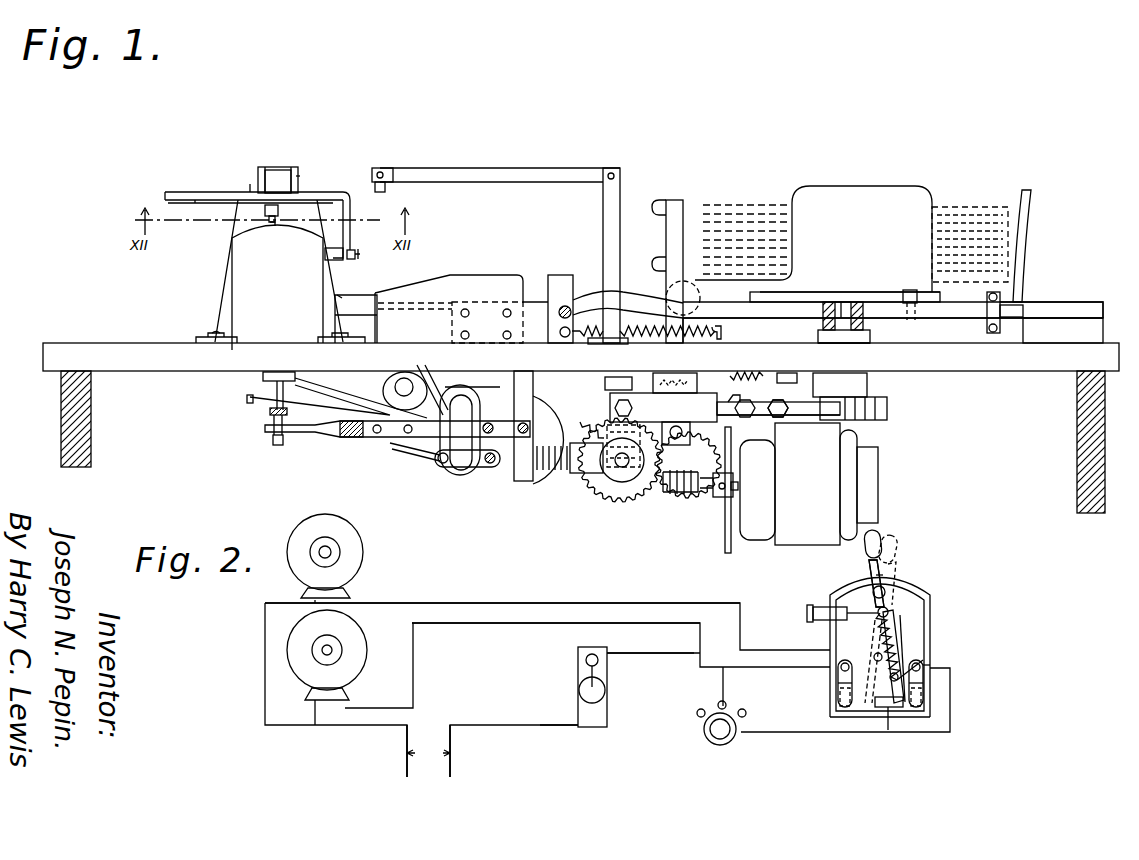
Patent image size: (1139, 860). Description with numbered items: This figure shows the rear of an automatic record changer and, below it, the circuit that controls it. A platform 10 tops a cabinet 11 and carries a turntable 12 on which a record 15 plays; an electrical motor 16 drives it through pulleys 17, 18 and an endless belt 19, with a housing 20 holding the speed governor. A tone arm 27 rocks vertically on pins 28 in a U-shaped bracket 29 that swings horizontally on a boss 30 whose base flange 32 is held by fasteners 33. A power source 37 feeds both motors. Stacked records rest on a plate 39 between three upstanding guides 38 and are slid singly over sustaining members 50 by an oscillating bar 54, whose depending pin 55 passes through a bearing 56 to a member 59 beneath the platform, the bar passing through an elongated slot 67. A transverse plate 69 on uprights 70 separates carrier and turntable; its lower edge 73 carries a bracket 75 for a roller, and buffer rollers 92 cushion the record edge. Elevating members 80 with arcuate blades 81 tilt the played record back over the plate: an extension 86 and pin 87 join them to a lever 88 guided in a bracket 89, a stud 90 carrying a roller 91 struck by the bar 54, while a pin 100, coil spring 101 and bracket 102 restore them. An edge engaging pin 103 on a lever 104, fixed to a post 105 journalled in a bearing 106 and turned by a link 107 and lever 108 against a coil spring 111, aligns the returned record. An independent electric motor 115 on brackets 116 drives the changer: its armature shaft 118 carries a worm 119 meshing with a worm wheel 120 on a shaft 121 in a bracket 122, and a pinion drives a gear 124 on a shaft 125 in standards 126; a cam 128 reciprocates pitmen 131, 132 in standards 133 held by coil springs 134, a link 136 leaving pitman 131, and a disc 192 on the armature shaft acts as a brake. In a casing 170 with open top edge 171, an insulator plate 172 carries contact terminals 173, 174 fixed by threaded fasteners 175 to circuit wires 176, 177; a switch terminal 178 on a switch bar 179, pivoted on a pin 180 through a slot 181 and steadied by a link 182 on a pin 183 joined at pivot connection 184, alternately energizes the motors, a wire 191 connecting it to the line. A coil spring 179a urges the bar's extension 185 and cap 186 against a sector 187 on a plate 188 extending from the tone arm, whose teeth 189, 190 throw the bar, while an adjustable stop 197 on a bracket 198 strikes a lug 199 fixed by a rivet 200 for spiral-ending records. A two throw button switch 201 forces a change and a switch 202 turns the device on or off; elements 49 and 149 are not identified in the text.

In FIG. 1, the platform 10 is at (173, 362).
In FIG. 1, the cabinet 11 is at (91, 442).
In FIG. 1, the turntable 12 is at (347, 316).
In FIG. 1, the record 15 is at (336, 297).
In FIG. 1, the electrical motor 16 is at (495, 485).
In FIG. 2, the electrical motor 16 is at (358, 656).
In FIG. 1, the pulley 17 is at (423, 458).
In FIG. 1, the pulley 18 is at (384, 388).
In FIG. 1, the endless belt 19 is at (445, 385).
In FIG. 1, the housing 20 is at (465, 387).
In FIG. 1, the tone arm 27 is at (278, 171).
In FIG. 1, the pins 28 is at (270, 168).
In FIG. 1, the U-shaped bracket 29 is at (298, 182).
In FIG. 1, the boss 30 is at (222, 292).
In FIG. 1, the base flange 32 is at (213, 334).
In FIG. 1, the fasteners 33 is at (210, 338).
In FIG. 2, the power source 37 is at (410, 730).
In FIG. 1, the upstanding guides 38 is at (911, 200).
In FIG. 1, the plate 39 is at (1060, 302).
In FIG. 1, the end block 49 is at (1089, 320).
In FIG. 1, the sustaining members 50 is at (762, 240).
In FIG. 1, the oscillating bar 54 is at (785, 298).
In FIG. 1, the depending pin 55 is at (845, 306).
In FIG. 1, the bearing 56 is at (868, 336).
In FIG. 1, the member 59 is at (887, 408).
In FIG. 1, the elongated slot 67 is at (814, 294).
In FIG. 1, the transverse plate 69 is at (657, 222).
In FIG. 1, the uprights 70 is at (676, 200).
In FIG. 1, the lower edge 73 is at (697, 275).
In FIG. 1, the bracket 75 is at (656, 266).
In FIG. 1, the elevating members 80 is at (466, 286).
In FIG. 1, the blades 81 is at (424, 306).
In FIG. 1, the extension 86 is at (534, 308).
In FIG. 1, the pin 87 is at (566, 306).
In FIG. 1, the lever 88 is at (742, 314).
In FIG. 1, the bracket 89 is at (1003, 320).
In FIG. 1, the stud 90 is at (912, 290).
In FIG. 1, the roller 91 is at (914, 320).
In FIG. 1, the edge buffer rollers 92 is at (668, 200).
In FIG. 1, the pin 100 is at (562, 336).
In FIG. 1, the coil spring 101 is at (668, 337).
In FIG. 1, the bracket 102 is at (745, 342).
In FIG. 1, the edge engaging pin 103 is at (388, 170).
In FIG. 1, the lever 104 is at (498, 168).
In FIG. 1, the post 105 is at (603, 206).
In FIG. 1, the bearing 106 is at (616, 344).
In FIG. 1, the link 107 is at (620, 383).
In FIG. 1, the lever 108 is at (740, 416).
In FIG. 1, the coil spring 111 is at (778, 410).
In FIG. 1, the electric motor 115 is at (823, 493).
In FIG. 2, the electric motor 115 is at (350, 566).
In FIG. 1, the brackets 116 is at (815, 420).
In FIG. 1, the armature shaft 118 is at (738, 490).
In FIG. 1, the worm 119 is at (688, 492).
In FIG. 1, the worm wheel 120 is at (705, 458).
In FIG. 1, the shaft 121 is at (682, 434).
In FIG. 1, the bracket 122 is at (678, 383).
In FIG. 1, the gear 124 is at (617, 496).
In FIG. 1, the shaft 125 is at (625, 468).
In FIG. 1, the standards 126 is at (633, 397).
In FIG. 1, the cam 128 is at (612, 480).
In FIG. 1, the pitman 131 is at (448, 468).
In FIG. 1, the pitman 132 is at (580, 468).
In FIG. 1, the standards 133 is at (523, 476).
In FIG. 1, the coil springs 134 is at (587, 438).
In FIG. 1, the link 136 is at (407, 440).
In FIG. 1, the bracket 149 is at (300, 384).
In FIG. 1, the casing 170 is at (258, 350).
In FIG. 2, the casing 170 is at (930, 620).
In FIG. 1, the upper peripheral edge 171 is at (246, 238).
In FIG. 2, the upper peripheral edge 171 is at (896, 591).
In FIG. 2, the insulator plate 172 is at (930, 616).
In FIG. 2, the contact terminal 173 is at (845, 690).
In FIG. 2, the contact terminal 174 is at (925, 670).
In FIG. 2, the threaded fasteners 175 is at (842, 665).
In FIG. 2, the circuit wire 176 is at (478, 625).
In FIG. 2, the circuit wire 177 is at (641, 603).
In FIG. 2, the switch terminal 178 is at (889, 708).
In FIG. 2, the switch bar 179 is at (903, 702).
In FIG. 2, the coil spring 179a is at (905, 650).
In FIG. 2, the pin 180 is at (885, 590).
In FIG. 2, the slot 181 is at (888, 578).
In FIG. 2, the link 182 is at (890, 705).
In FIG. 2, the pin 183 is at (882, 660).
In FIG. 2, the pivot connection 184 is at (950, 651).
In FIG. 1, the extension 185 is at (273, 226).
In FIG. 2, the extension 185 is at (875, 574).
In FIG. 1, the cap 186 is at (266, 208).
In FIG. 2, the cap 186 is at (880, 541).
In FIG. 1, the sector 187 is at (198, 200).
In FIG. 1, the plate 188 is at (250, 185).
In FIG. 1, the teeth 189 is at (166, 203).
In FIG. 1, the teeth 190 is at (348, 215).
In FIG. 2, the wire 191 is at (649, 656).
In FIG. 1, the disc 192 is at (727, 553).
In FIG. 1, the adjustable stop 197 is at (351, 255).
In FIG. 1, the bracket 198 is at (386, 192).
In FIG. 1, the lug 199 is at (333, 260).
In FIG. 2, the lug 199 is at (807, 613).
In FIG. 2, the rivet 200 is at (878, 612).
In FIG. 2, the two throw button switch 201 is at (722, 745).
In FIG. 2, the switch 202 is at (600, 700).